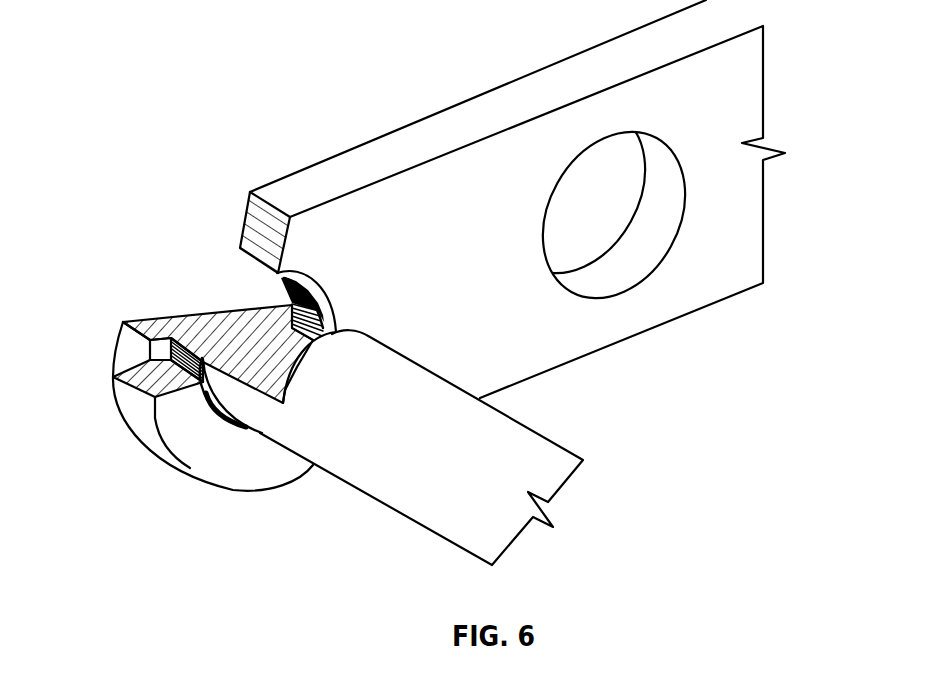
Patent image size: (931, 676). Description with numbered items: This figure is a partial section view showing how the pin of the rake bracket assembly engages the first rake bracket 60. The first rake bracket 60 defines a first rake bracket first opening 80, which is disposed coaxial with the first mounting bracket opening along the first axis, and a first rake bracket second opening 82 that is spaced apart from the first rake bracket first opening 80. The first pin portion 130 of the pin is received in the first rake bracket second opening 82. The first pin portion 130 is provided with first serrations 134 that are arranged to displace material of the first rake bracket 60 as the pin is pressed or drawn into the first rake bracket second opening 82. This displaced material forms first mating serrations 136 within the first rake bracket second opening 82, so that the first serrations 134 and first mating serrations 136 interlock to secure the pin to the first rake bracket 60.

The first rake bracket 60 is at (622, 372).
The first rake bracket first opening 80 is at (657, 225).
The first rake bracket second opening 82 is at (315, 290).
The first pin portion 130 is at (417, 495).
The first serrations 134 is at (130, 394).
The first mating serrations 136 is at (290, 307).